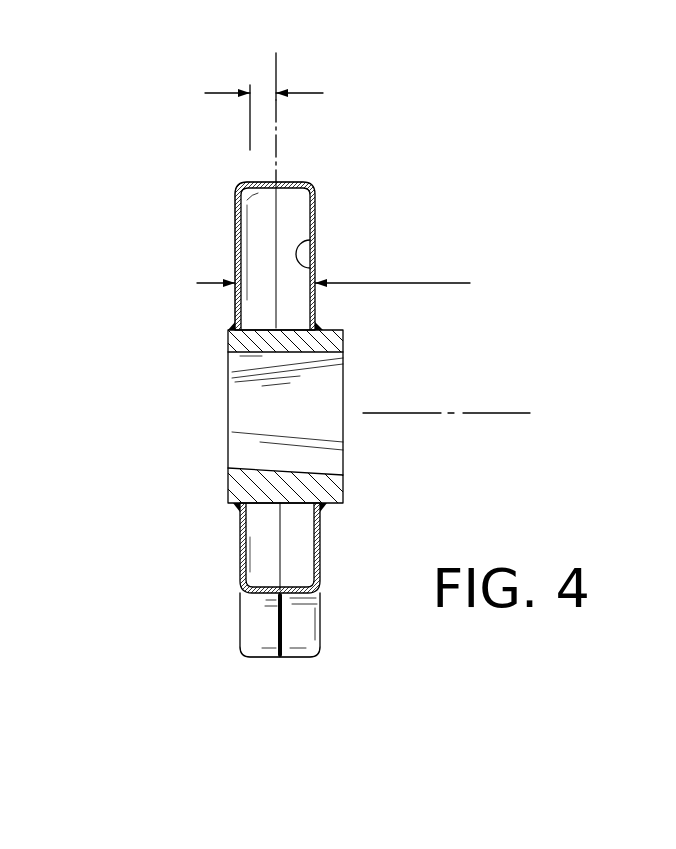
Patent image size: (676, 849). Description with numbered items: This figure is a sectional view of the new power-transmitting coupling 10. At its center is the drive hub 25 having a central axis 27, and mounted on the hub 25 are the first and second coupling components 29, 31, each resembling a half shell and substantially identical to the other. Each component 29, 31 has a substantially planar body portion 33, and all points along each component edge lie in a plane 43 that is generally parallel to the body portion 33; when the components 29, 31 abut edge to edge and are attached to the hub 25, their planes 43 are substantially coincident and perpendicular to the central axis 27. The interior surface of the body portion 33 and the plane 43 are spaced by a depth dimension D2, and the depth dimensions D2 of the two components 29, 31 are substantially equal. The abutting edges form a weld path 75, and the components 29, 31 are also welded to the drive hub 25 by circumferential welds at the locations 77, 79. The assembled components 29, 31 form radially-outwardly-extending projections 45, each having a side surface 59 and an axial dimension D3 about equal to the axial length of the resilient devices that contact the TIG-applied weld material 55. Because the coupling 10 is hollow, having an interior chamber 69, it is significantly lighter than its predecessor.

The power-transmitting coupling 10 is at (170, 180).
The plane 43 is at (278, 67).
The depth dimension D2 is at (238, 113).
The axial dimension of finger and projection D3 is at (364, 281).
The weld path 75 is at (278, 183).
The second coupling component 31 is at (315, 208).
The first coupling component 29 is at (236, 204).
The body portion 33 is at (314, 273).
The weld location 79 is at (322, 328).
The weld location 77 is at (233, 330).
The central axis 27 is at (485, 413).
The drive hub 25 is at (268, 507).
The interior chamber 69 is at (298, 543).
The side surface 59 is at (258, 626).
The TIG-applied weld material 55 is at (250, 650).
The projection 45 is at (320, 650).